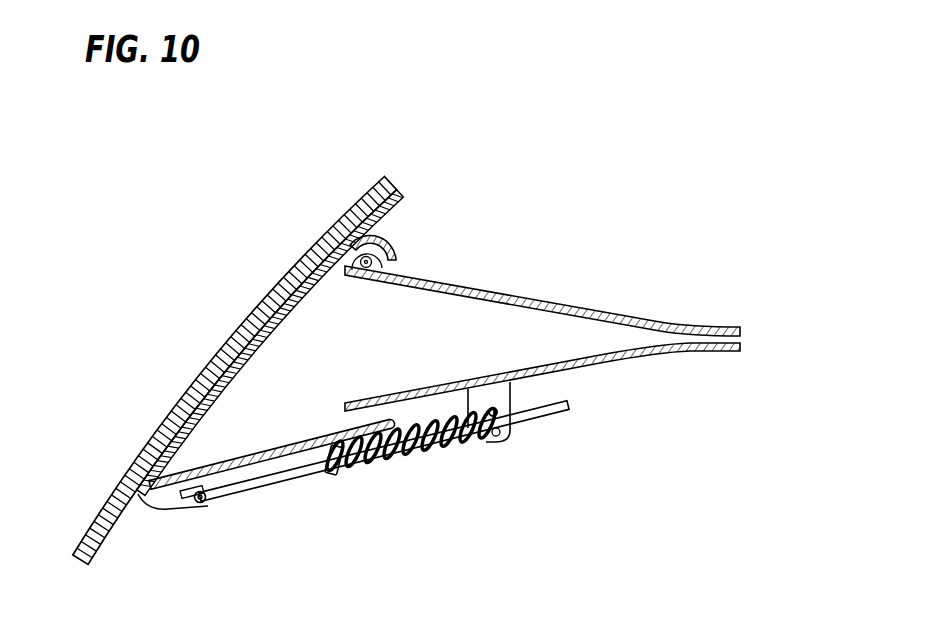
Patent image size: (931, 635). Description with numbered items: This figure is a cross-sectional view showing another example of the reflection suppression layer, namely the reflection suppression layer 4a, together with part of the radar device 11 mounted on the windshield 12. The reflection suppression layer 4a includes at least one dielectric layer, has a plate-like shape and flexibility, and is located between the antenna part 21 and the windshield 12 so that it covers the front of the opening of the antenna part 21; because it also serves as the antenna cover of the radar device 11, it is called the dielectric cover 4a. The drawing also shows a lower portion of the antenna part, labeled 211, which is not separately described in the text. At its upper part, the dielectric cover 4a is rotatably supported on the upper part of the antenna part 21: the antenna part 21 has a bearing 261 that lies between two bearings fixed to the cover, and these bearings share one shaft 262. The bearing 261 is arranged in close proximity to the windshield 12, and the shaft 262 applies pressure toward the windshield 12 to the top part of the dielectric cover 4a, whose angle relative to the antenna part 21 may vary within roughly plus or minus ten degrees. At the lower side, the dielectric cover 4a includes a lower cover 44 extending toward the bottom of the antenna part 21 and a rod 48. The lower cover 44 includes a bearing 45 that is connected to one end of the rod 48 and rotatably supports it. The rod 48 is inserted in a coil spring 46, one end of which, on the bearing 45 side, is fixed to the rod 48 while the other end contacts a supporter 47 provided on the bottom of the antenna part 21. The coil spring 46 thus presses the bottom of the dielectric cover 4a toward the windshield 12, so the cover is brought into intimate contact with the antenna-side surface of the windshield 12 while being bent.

The radar device 11 is at (593, 229).
The windshield 12 is at (234, 337).
The antenna part 21 is at (533, 297).
The lower plate of shelf 211 is at (597, 384).
The bearing 261 is at (378, 243).
The shaft 262 is at (340, 226).
The lower cover 44 is at (303, 450).
The bearing 45 is at (192, 508).
The coil spring 46 is at (406, 456).
The supporter 47 is at (505, 402).
The rod 48 is at (240, 494).
The reflection suppression layer 4a is at (198, 430).